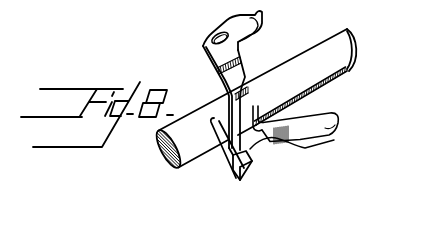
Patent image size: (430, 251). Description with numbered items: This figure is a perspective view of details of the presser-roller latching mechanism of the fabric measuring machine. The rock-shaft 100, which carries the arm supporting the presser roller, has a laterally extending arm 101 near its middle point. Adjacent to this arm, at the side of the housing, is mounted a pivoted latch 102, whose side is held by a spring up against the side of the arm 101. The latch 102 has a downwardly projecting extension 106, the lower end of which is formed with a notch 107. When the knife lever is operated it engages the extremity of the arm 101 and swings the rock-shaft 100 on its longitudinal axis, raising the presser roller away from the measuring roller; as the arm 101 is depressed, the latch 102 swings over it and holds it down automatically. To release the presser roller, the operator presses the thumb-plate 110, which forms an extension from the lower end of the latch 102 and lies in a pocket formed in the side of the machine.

The rock-shaft 100 is at (336, 64).
The laterally extending arm 101 is at (253, 163).
The latch 102 is at (262, 40).
The downwardly projecting extension 106 is at (250, 99).
The notch 107 is at (286, 149).
The thumb-plate 110 is at (338, 130).